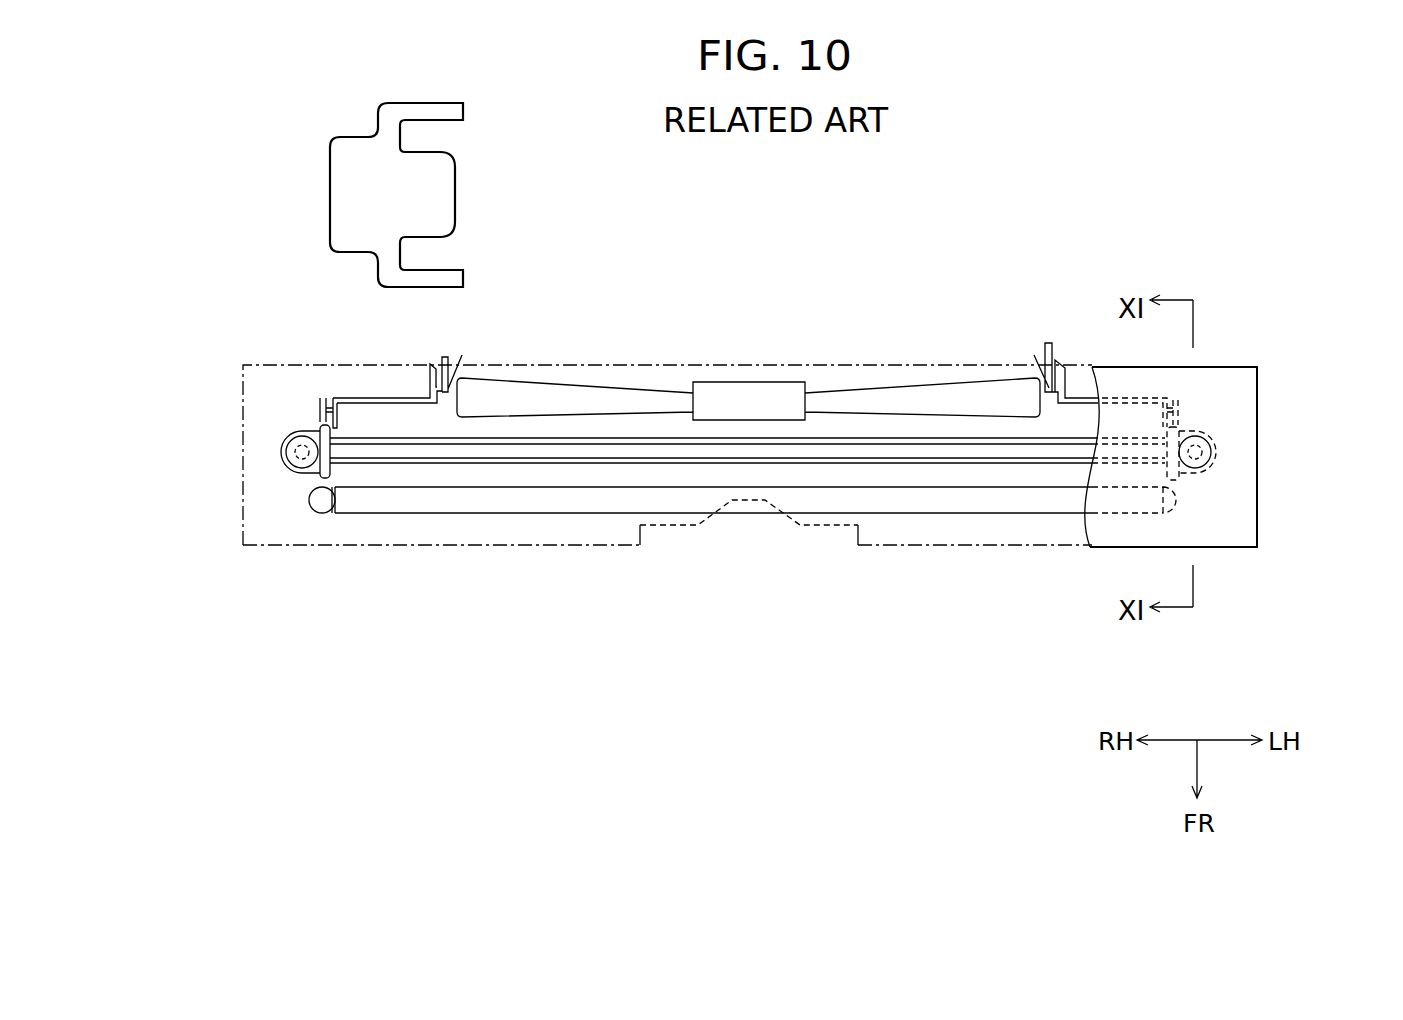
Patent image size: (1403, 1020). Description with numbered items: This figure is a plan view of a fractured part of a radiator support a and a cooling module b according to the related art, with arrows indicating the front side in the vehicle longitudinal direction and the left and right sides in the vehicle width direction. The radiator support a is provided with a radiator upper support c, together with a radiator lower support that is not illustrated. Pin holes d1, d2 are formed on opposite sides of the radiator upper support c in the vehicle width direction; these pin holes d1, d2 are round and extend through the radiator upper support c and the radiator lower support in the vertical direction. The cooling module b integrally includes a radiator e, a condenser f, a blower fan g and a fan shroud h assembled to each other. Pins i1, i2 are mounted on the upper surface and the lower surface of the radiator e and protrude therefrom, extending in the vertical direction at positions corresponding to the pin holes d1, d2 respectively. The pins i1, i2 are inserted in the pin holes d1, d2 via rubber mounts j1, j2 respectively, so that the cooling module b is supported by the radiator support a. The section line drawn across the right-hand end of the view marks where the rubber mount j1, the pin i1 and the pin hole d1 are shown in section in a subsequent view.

The radiator support a is at (1230, 357).
The cooling module b is at (588, 526).
The radiator upper support c is at (1232, 387).
The pin hole d1 is at (1211, 453).
The pin hole d2 is at (283, 443).
The radiator e is at (818, 463).
The condenser f is at (928, 513).
The blower fan g is at (555, 397).
The fan shroud h is at (377, 398).
The pin i1 is at (1214, 427).
The pin i2 is at (296, 458).
The rubber mount j1 is at (1193, 468).
The rubber mount j2 is at (303, 470).